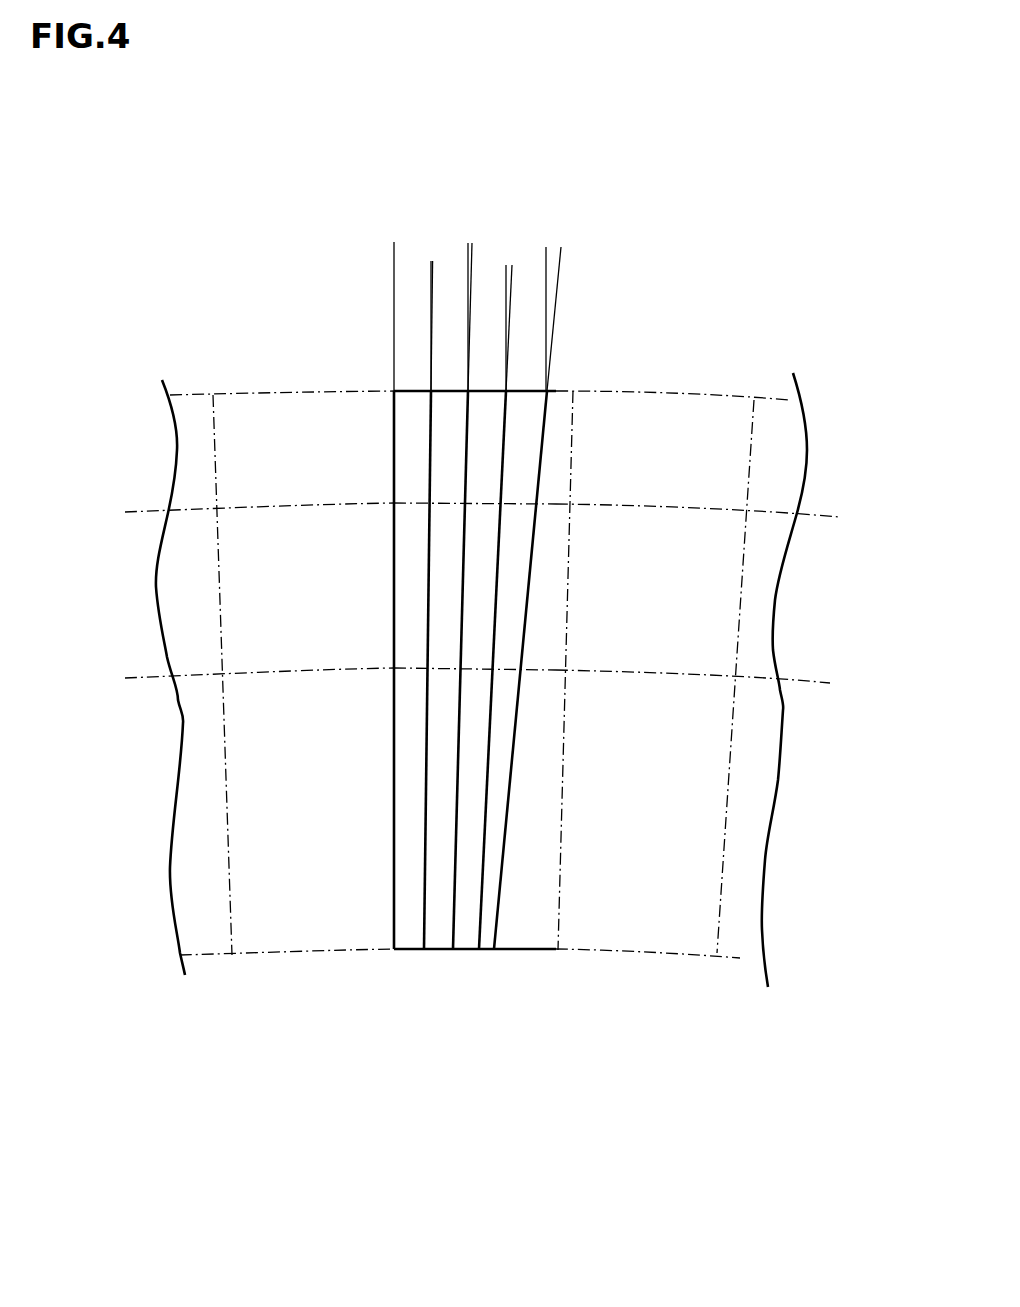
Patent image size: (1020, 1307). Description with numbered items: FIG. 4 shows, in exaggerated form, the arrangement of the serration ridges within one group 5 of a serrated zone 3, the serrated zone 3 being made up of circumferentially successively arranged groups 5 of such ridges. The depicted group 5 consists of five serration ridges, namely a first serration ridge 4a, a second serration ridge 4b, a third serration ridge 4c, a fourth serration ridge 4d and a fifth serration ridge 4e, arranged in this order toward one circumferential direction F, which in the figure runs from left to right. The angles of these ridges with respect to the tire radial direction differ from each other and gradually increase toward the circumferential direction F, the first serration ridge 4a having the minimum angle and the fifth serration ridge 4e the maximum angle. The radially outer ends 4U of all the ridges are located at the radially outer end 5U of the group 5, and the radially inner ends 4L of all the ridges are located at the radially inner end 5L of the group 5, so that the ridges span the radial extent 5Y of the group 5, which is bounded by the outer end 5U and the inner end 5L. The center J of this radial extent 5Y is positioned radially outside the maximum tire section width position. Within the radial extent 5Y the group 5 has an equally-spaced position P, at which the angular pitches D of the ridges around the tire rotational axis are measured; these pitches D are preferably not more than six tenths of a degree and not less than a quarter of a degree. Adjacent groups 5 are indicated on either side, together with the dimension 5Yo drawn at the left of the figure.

The serrated zone 3 is at (683, 320).
The radially outer ends of serration ridges 4U is at (558, 385).
The radially inner ends of serration ridges 4L is at (505, 955).
The first serration ridge 4a is at (394, 924).
The second serration ridge 4b is at (426, 921).
The third serration ridge 4c is at (456, 921).
The fourth serration ridge 4d is at (483, 921).
The fifth serration ridge 4e is at (497, 921).
The group of serration ridges 5 is at (235, 965).
The radially outer end of group 5U is at (770, 398).
The radially inner end of group 5L is at (738, 958).
The radial extent of group 5Y is at (842, 405).
The outer land portion width 5Yo is at (125, 402).
The angular pitch of serration ridges D is at (410, 500).
The equally-spaced position P is at (822, 517).
The center of radial extent J is at (812, 690).
The circumferential direction F is at (212, 358).